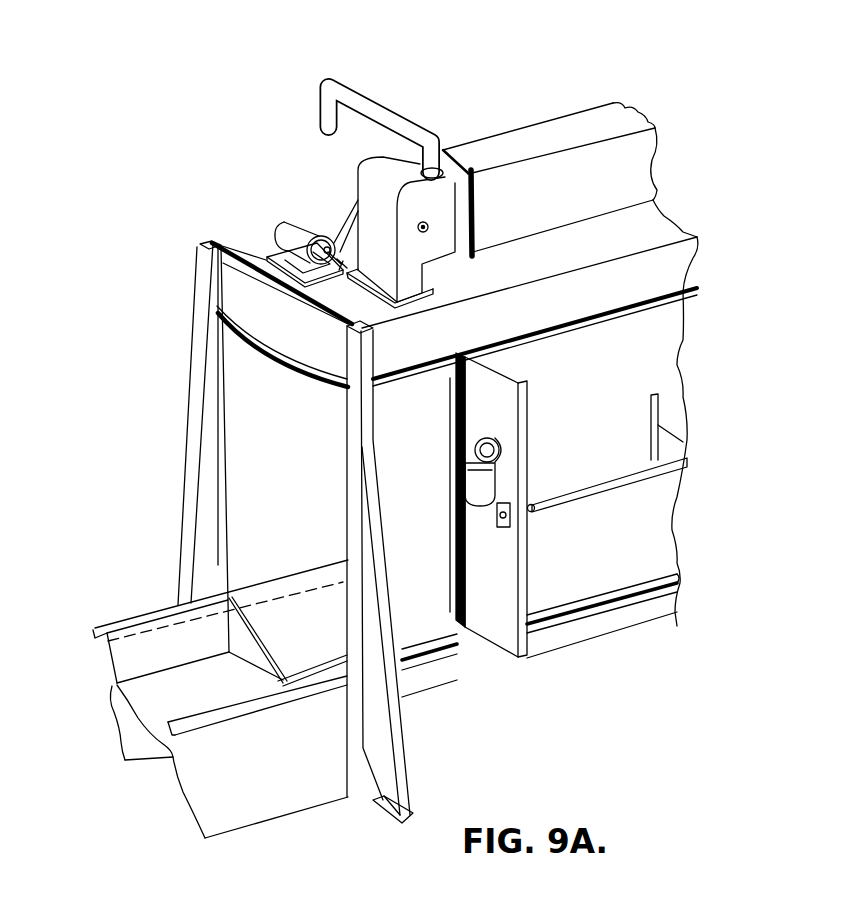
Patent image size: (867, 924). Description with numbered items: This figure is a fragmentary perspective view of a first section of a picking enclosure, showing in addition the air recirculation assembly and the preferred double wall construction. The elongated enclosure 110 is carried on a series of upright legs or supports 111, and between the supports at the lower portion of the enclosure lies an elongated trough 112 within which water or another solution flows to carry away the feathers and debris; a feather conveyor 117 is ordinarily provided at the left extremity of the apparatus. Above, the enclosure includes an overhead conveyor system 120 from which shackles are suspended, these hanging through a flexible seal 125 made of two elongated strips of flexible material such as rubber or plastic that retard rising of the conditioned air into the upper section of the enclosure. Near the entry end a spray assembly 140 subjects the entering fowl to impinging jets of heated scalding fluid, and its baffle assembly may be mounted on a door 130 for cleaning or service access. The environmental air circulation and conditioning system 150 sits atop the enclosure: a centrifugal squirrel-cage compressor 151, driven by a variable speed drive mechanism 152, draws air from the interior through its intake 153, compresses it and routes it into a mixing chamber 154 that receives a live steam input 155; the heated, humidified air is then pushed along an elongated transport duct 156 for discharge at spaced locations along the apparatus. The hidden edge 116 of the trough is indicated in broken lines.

The elongated enclosure 110 is at (491, 104).
The upright legs or supports 111 is at (378, 747).
The elongated trough 112 is at (315, 670).
The hidden edge of tray 116 is at (282, 597).
The feather conveyor 117 is at (262, 760).
The overhead conveyor system 120 is at (320, 305).
The flexible seal 125 is at (288, 369).
The door 130 is at (606, 381).
The spray assembly 140 is at (596, 483).
The environmental air circulation and conditioning system 150 is at (578, 110).
The centrifugal squirrel-cage compressor 151 is at (413, 245).
The variable speed drive mechanism 152 is at (300, 230).
The intake 153 is at (372, 285).
The mixing chamber 154 is at (446, 218).
The live steam input 155 is at (383, 108).
The elongated transport duct 156 is at (637, 150).